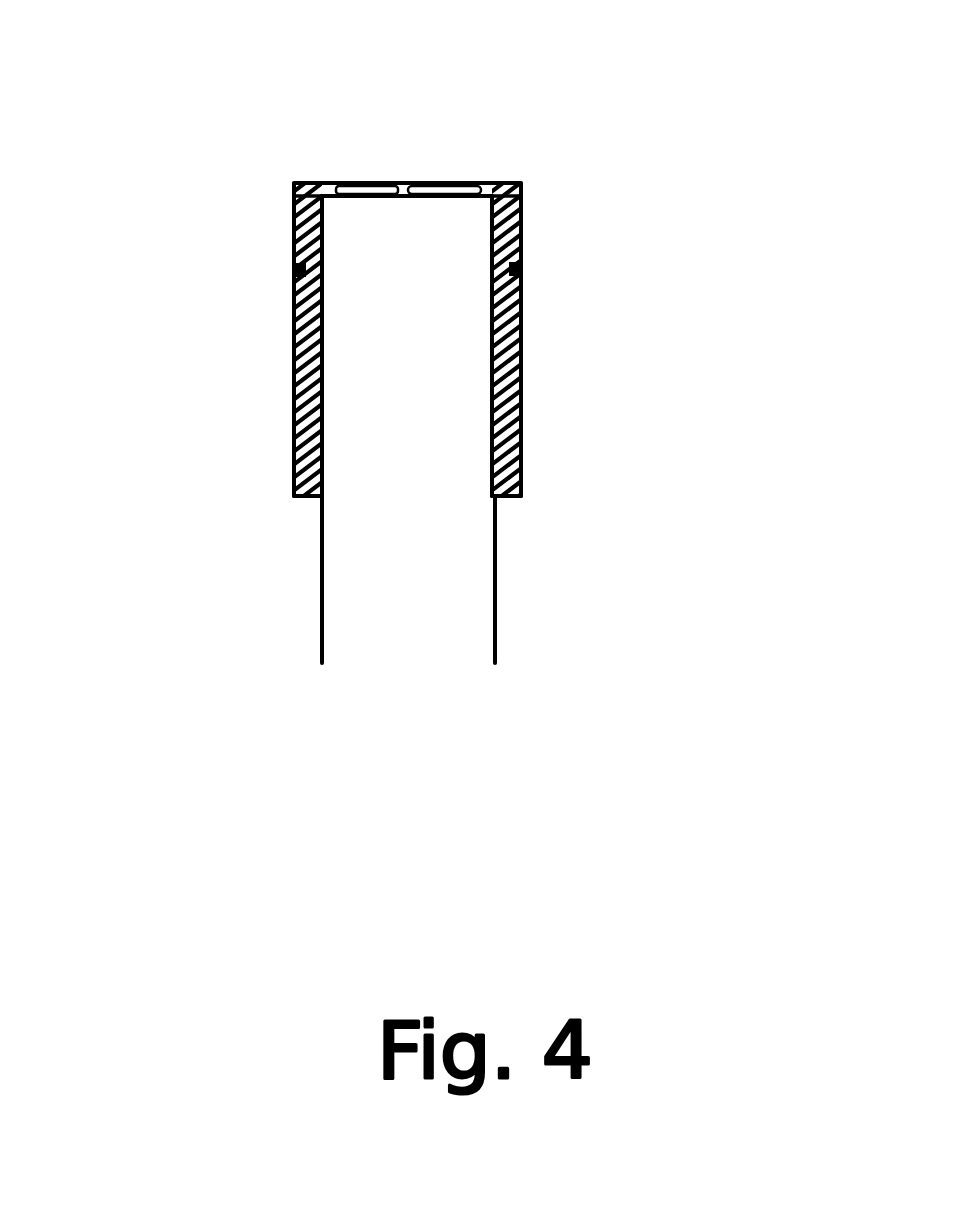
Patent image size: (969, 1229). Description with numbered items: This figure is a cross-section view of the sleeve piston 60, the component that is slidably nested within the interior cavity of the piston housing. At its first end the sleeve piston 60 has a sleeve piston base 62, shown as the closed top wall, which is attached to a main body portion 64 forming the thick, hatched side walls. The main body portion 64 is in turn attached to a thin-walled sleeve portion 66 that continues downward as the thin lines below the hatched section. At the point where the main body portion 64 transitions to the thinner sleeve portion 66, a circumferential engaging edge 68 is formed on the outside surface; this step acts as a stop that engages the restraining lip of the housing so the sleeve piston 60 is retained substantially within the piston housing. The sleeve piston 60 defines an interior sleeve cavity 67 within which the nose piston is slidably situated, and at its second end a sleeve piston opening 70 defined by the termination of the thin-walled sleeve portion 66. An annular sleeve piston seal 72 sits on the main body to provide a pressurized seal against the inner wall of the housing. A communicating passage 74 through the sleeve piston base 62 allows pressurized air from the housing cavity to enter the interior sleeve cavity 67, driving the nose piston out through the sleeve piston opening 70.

The sleeve piston 60 is at (548, 247).
The sleeve piston base 62 is at (318, 183).
The main body portion 64 is at (520, 375).
The thin-walled sleeve portion 66 is at (497, 590).
The interior sleeve cavity 67 is at (418, 323).
The circumferential engaging edge 68 is at (307, 500).
The sleeve piston opening 70 is at (523, 647).
The annular sleeve piston seal 72 is at (525, 266).
The communicating passage 74 is at (432, 170).